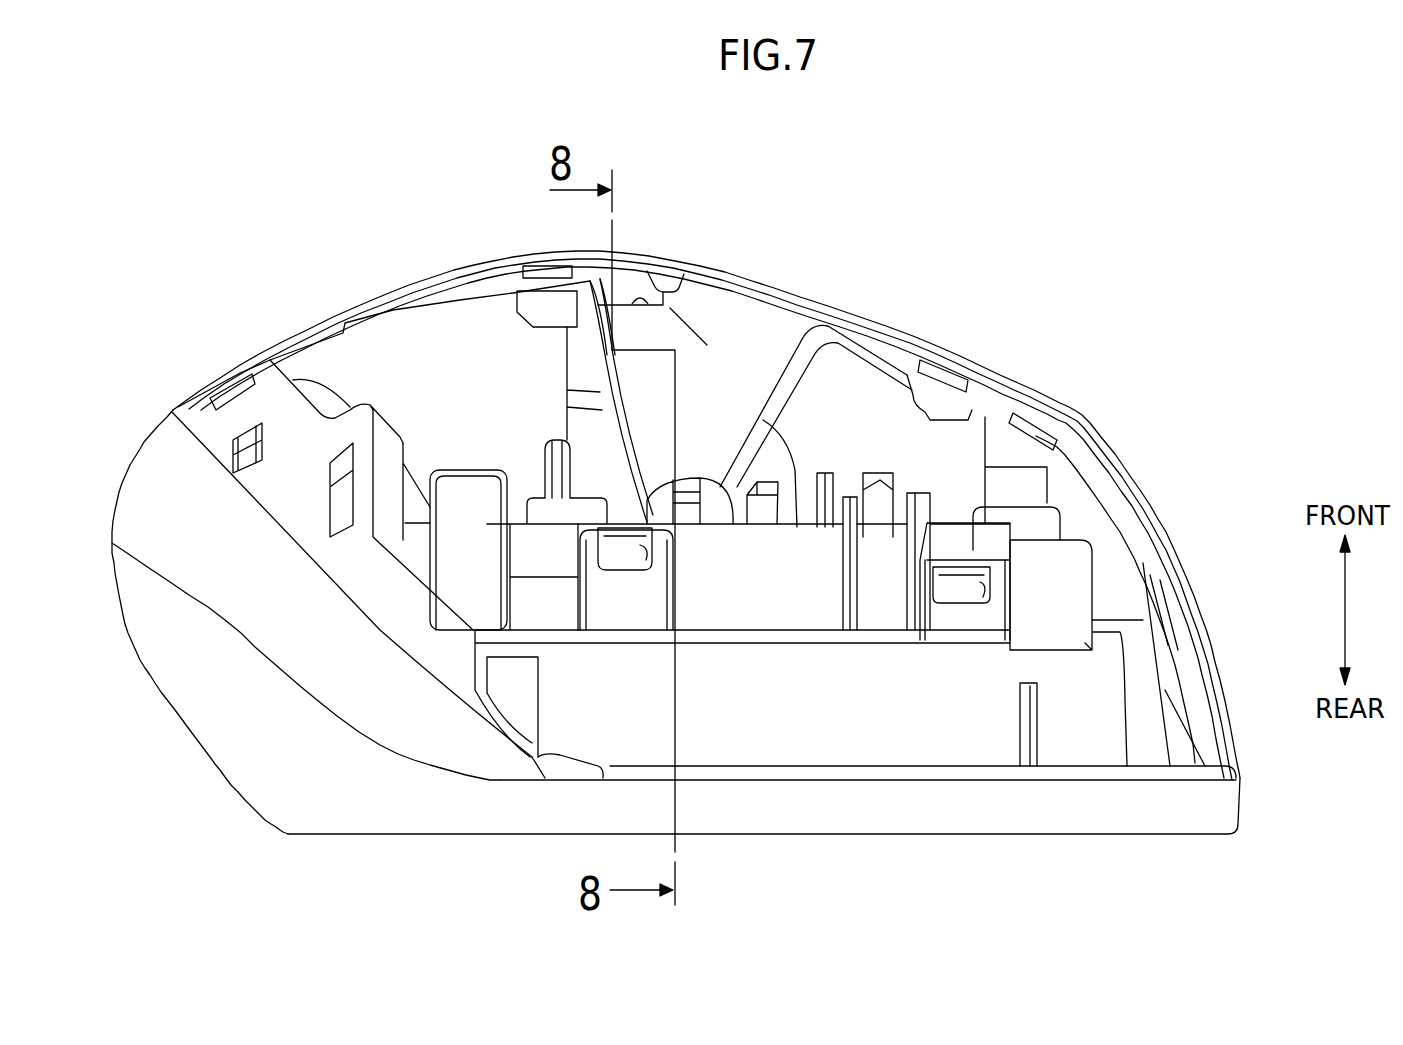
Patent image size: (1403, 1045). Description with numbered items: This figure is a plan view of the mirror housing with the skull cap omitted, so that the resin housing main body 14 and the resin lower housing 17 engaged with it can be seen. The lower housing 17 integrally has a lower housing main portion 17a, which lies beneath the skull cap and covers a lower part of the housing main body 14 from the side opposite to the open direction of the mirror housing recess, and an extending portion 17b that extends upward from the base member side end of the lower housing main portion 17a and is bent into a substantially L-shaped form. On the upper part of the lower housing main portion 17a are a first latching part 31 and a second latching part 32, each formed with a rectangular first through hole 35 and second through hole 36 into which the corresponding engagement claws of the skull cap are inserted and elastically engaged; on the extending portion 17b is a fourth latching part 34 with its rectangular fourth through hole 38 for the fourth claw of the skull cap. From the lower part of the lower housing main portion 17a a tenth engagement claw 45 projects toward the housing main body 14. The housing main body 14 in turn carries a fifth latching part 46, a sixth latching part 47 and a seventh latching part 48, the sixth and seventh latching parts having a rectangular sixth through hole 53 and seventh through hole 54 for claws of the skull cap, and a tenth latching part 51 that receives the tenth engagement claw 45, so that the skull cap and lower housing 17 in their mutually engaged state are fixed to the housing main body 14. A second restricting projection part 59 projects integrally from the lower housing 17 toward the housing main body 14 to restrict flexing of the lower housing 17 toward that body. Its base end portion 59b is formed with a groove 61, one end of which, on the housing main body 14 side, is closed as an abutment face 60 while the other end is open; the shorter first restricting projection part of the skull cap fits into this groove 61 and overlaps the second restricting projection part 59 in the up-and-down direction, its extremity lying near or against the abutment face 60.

The housing main body 14 is at (857, 813).
The lower housing 17 is at (866, 330).
The lower housing main portion 17a is at (1030, 410).
The extending portion 17b is at (335, 683).
The first latching part 31 is at (938, 405).
The second latching part 32 is at (533, 305).
The fourth latching part 34 is at (390, 455).
The first through hole 35 is at (943, 367).
The second through hole 36 is at (533, 268).
The fourth through hole 38 is at (347, 508).
The tenth engagement claw 45 is at (998, 450).
The fifth latching part 46 is at (447, 553).
The sixth latching part 47 is at (628, 608).
The seventh latching part 48 is at (973, 617).
The tenth latching part 51 is at (1040, 527).
The sixth through hole 53 is at (643, 572).
The seventh through hole 54 is at (975, 575).
The second restricting projection part 59 is at (792, 500).
The base end portion 59b is at (688, 283).
The abutment face 60 is at (650, 306).
The groove 61 is at (652, 282).